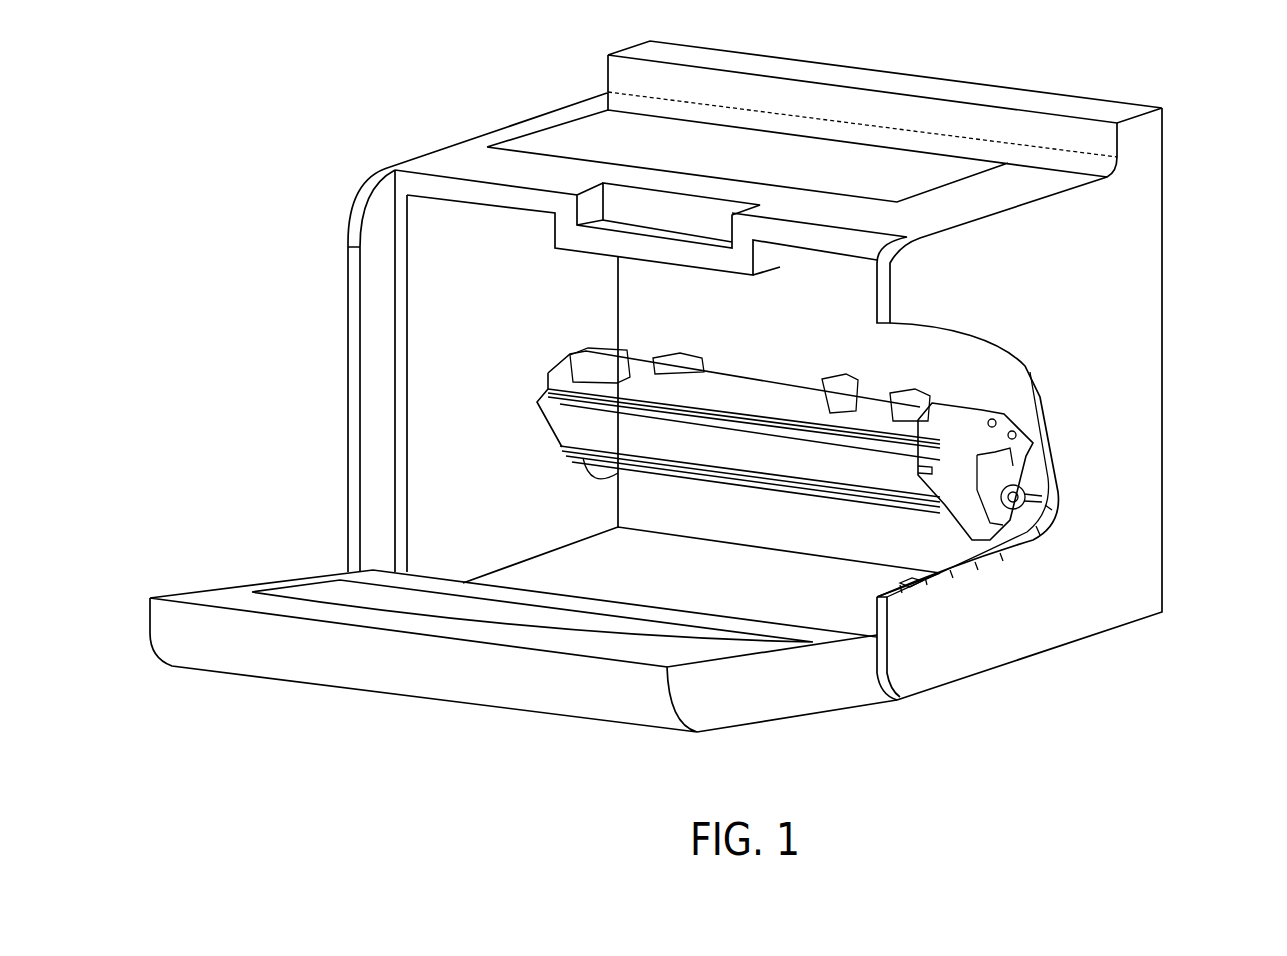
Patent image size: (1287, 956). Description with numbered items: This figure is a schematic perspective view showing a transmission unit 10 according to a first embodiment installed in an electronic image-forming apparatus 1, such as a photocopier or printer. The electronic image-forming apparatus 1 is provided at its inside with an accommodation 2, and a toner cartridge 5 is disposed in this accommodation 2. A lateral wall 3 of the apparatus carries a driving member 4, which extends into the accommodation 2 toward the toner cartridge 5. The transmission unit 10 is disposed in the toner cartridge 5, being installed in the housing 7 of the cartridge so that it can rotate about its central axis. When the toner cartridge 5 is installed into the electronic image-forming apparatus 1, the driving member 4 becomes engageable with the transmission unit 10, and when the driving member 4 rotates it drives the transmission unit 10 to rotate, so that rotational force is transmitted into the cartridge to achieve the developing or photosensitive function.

The electronic image-forming apparatus 1 is at (703, 386).
The accommodation 2 is at (751, 381).
The lateral wall 3 is at (1107, 268).
The driving member 4 is at (1045, 500).
The toner cartridge 5 is at (578, 432).
The housing 7 is at (960, 468).
The transmission unit 10 is at (1000, 520).